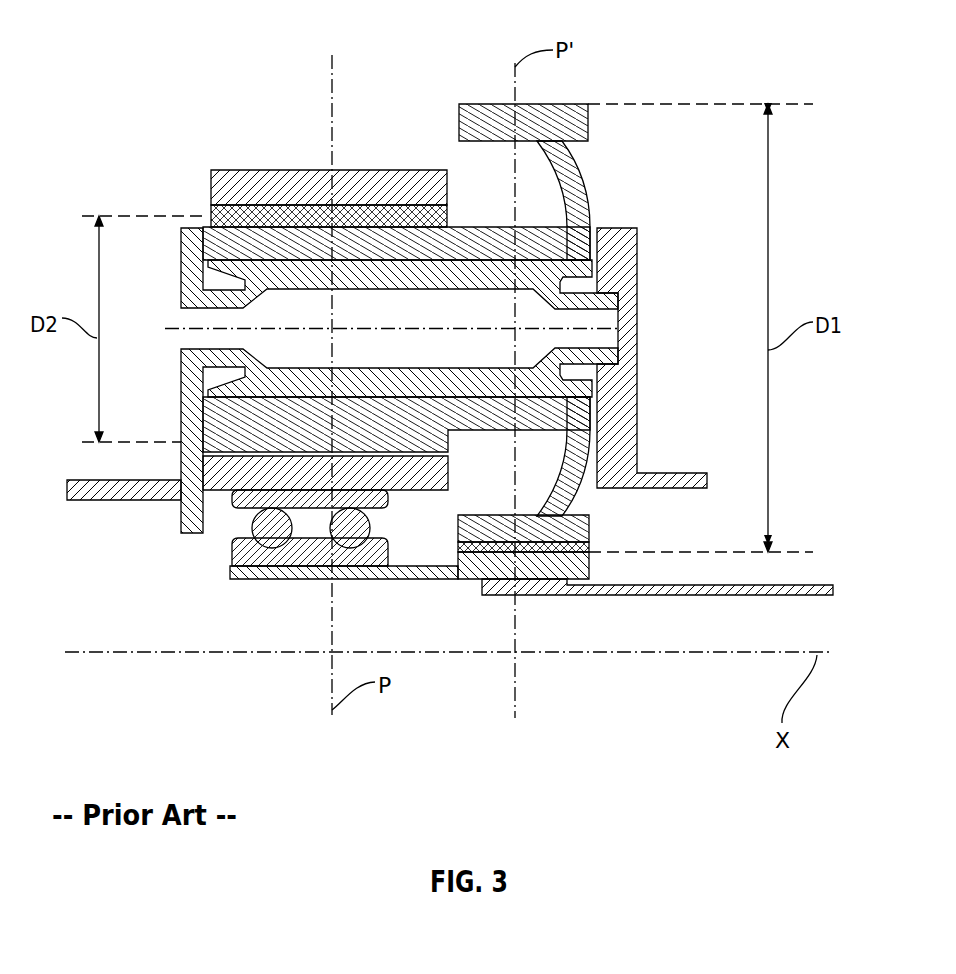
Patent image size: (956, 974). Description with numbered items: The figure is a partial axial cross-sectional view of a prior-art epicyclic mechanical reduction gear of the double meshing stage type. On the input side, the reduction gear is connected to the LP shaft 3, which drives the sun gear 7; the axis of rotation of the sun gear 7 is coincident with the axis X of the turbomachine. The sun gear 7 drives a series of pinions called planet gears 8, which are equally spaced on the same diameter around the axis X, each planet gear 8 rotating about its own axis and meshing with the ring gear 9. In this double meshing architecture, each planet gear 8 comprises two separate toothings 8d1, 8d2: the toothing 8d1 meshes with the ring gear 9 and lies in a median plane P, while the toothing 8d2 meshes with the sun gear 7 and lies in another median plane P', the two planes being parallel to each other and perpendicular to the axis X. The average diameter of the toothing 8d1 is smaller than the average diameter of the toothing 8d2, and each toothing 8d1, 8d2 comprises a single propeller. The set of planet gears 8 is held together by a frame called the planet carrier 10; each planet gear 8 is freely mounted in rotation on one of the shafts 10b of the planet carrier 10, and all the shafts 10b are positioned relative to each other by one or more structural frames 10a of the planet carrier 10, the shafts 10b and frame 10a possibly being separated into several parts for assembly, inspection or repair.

The LP shaft 3 is at (773, 592).
The sun gear 7 is at (460, 572).
The planet gear 8 is at (587, 196).
The toothing 8d1 is at (248, 197).
The toothing 8d2 is at (582, 103).
The ring gear 9 is at (292, 180).
The planet carrier 10 is at (625, 338).
The structural frame 10a is at (625, 367).
The shaft 10b is at (527, 278).